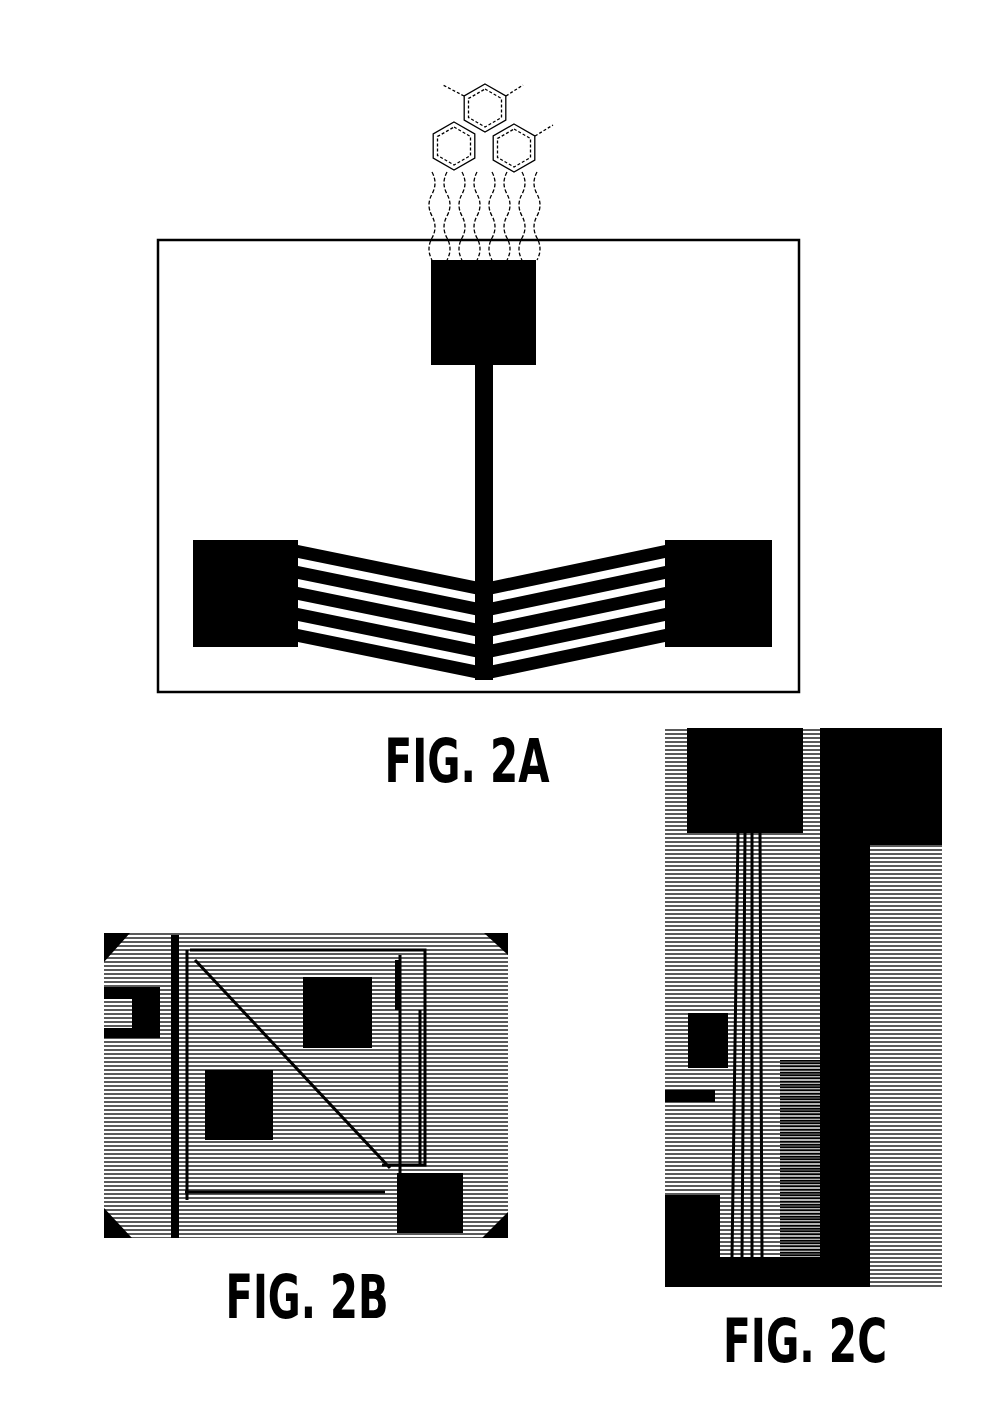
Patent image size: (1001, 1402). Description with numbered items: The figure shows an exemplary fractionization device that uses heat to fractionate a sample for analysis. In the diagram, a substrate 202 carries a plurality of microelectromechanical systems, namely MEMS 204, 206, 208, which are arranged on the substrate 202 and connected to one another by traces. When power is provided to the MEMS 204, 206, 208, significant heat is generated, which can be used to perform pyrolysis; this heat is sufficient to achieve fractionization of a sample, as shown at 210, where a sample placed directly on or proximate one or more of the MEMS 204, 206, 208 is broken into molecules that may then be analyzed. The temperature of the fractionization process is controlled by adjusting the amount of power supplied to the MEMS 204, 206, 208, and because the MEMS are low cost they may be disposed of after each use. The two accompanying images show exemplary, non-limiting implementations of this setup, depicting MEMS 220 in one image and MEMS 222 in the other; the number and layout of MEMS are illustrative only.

In FIG. 2A, the substrate 202 is at (745, 355).
In FIG. 2A, the microelectromechanical system 204 is at (433, 318).
In FIG. 2A, the microelectromechanical system 206 is at (207, 538).
In FIG. 2A, the microelectromechanical system 208 is at (737, 537).
In FIG. 2A, the fractionization of a sample 210 is at (477, 67).
In FIG. 2B, the MEMS 220 is at (341, 977).
In FIG. 2C, the MEMS 222 is at (883, 728).